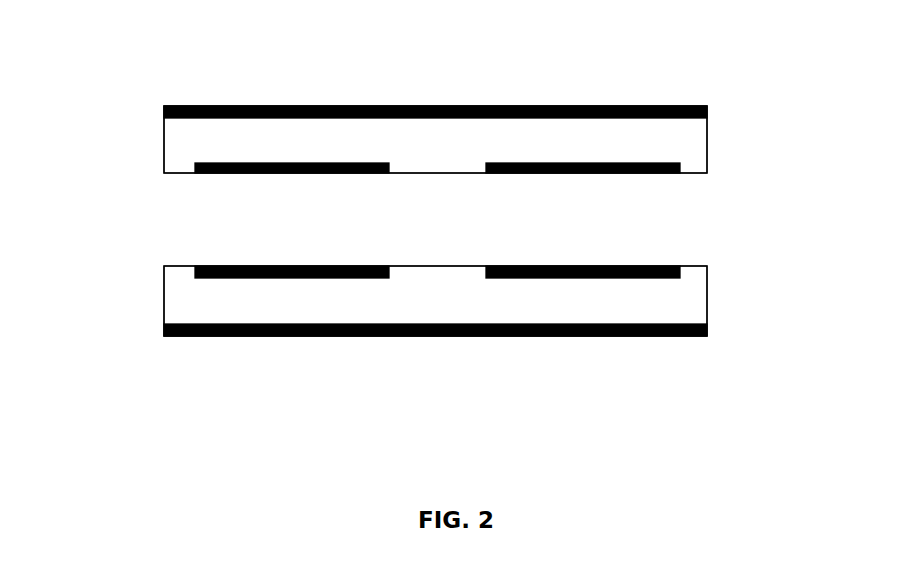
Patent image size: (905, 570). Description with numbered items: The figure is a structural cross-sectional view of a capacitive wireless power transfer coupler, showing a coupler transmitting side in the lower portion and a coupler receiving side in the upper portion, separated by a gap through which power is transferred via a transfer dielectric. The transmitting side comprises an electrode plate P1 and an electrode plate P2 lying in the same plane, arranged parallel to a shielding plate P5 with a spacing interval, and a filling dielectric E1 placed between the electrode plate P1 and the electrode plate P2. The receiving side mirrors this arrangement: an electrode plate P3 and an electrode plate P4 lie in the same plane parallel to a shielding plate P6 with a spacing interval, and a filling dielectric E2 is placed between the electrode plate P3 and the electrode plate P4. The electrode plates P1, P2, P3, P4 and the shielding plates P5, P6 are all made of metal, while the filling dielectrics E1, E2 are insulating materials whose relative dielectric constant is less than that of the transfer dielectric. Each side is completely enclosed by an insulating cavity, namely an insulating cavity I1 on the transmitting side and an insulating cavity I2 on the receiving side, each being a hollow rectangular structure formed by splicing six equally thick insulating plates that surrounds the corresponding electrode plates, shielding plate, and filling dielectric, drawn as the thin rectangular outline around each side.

The filling dielectric E1 is at (352, 299).
The filling dielectric E2 is at (347, 133).
The insulating cavity I1 is at (164, 266).
The insulating cavity I2 is at (164, 173).
The electrode plate P1 is at (260, 278).
The electrode plate P2 is at (670, 278).
The electrode plate P3 is at (257, 163).
The electrode plate P4 is at (668, 163).
The shielding plate P5 is at (672, 335).
The shielding plate P6 is at (650, 106).